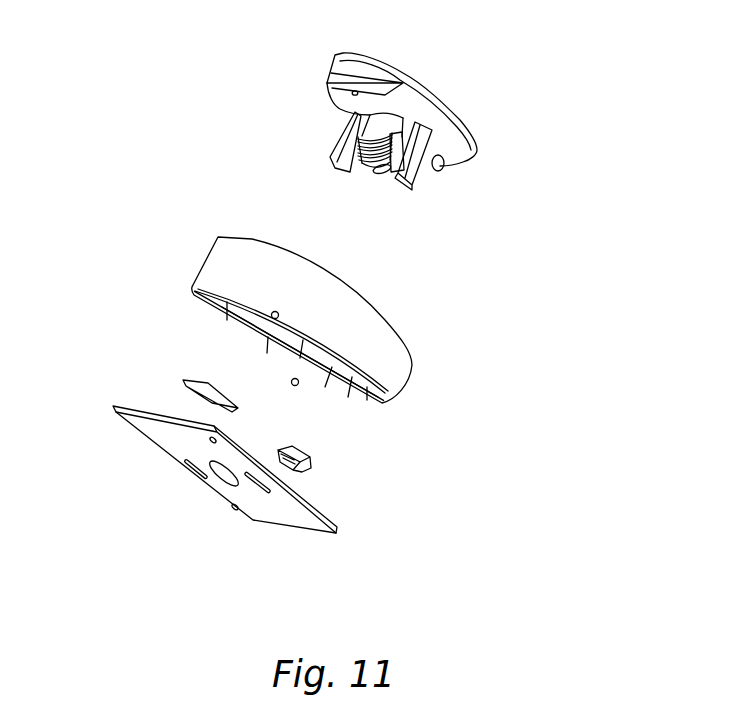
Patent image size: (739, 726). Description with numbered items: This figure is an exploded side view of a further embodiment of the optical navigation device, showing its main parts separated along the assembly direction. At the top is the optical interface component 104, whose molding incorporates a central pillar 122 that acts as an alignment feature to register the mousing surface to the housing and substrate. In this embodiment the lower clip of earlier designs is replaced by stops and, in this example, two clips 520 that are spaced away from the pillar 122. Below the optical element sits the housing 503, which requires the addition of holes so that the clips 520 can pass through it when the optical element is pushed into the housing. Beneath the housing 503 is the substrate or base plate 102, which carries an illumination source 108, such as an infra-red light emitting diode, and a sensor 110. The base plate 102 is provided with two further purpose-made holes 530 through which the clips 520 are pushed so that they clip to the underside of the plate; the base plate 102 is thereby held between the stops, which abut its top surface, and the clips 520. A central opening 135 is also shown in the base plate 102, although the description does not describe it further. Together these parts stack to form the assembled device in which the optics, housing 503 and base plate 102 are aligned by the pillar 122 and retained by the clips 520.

The optical interface component 104 is at (435, 114).
The central pillar 122 is at (382, 127).
The clips 520 is at (347, 160).
The housing 503 is at (372, 350).
The sensor 110 is at (205, 397).
The substrate/base plate 102 is at (160, 437).
The central opening 135 is at (227, 477).
The holes 530 is at (198, 470).
The illumination source 108 is at (303, 460).